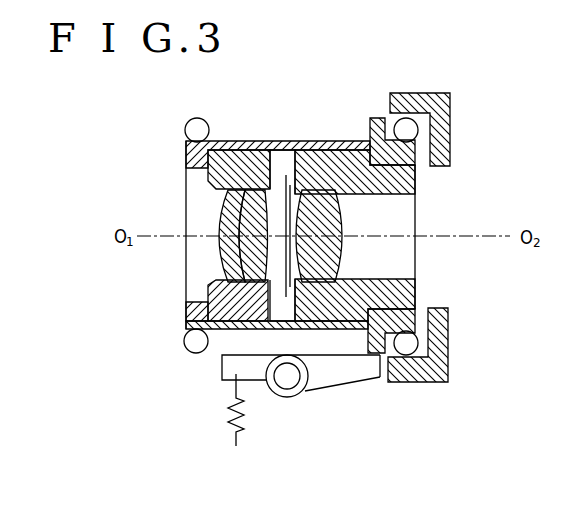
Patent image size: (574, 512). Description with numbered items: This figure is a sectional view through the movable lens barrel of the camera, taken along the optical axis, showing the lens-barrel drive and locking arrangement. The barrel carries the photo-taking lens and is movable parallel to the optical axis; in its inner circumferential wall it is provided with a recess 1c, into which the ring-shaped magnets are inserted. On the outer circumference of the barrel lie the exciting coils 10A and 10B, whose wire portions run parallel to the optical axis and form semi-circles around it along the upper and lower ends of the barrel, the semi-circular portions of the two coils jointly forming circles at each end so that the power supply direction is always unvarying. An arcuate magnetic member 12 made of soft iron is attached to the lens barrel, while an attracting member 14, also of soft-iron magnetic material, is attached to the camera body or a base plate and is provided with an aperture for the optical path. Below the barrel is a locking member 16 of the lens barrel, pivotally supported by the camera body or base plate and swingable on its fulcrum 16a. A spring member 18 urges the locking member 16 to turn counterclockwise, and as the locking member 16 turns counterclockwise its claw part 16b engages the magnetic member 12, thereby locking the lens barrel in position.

The recess 1c is at (280, 155).
The exciting coil 10A is at (193, 349).
The exciting coil 10B is at (195, 118).
The arcuate magnetic member 12 is at (368, 130).
The attracting member 14 is at (452, 107).
The locking member 16 is at (358, 370).
The fulcrum 16a is at (290, 382).
The claw part 16b is at (383, 363).
The spring member 18 is at (228, 418).